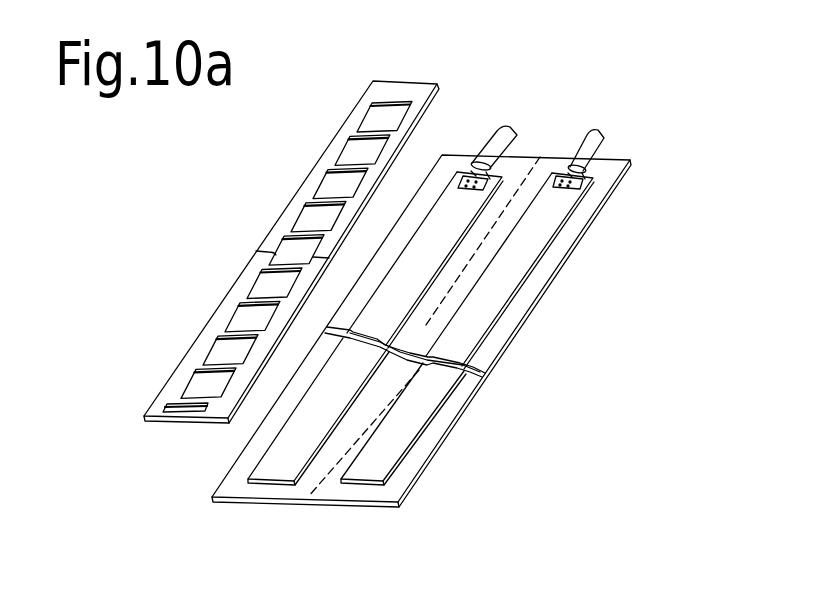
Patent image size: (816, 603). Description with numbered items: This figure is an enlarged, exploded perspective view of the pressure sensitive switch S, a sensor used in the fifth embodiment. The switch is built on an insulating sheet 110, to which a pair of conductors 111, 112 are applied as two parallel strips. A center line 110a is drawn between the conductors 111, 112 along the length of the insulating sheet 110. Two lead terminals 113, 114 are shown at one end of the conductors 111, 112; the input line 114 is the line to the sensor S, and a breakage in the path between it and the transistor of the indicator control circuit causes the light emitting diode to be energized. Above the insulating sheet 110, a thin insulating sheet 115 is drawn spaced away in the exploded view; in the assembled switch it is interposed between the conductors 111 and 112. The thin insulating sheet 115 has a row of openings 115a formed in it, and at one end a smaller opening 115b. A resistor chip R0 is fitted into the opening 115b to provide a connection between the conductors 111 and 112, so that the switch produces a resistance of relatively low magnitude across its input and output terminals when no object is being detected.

The insulating sheet 110 is at (403, 496).
The center line of substrate 110a is at (310, 490).
The conductor 111 is at (374, 478).
The conductor 112 is at (262, 478).
The lead terminal 113 is at (590, 172).
The input line 114 is at (498, 170).
The thin insulating sheet 115 is at (422, 80).
The opening 115a is at (352, 152).
The opening 115b is at (178, 421).